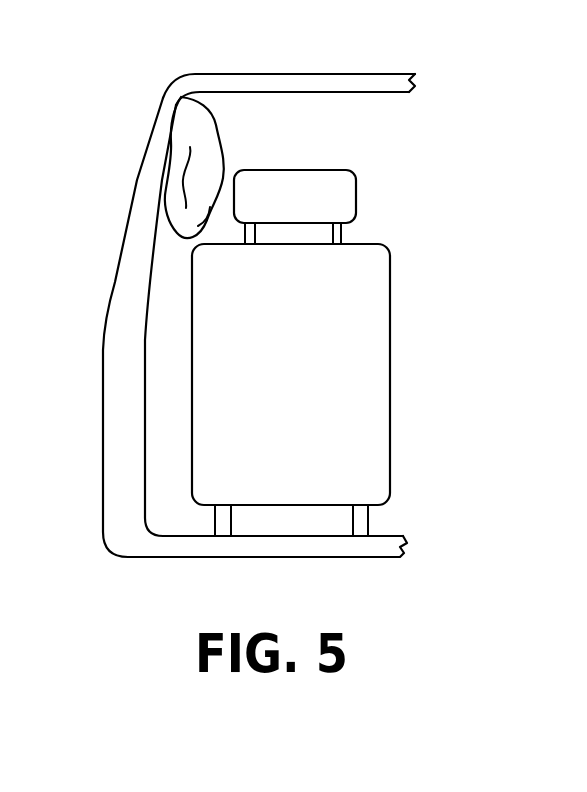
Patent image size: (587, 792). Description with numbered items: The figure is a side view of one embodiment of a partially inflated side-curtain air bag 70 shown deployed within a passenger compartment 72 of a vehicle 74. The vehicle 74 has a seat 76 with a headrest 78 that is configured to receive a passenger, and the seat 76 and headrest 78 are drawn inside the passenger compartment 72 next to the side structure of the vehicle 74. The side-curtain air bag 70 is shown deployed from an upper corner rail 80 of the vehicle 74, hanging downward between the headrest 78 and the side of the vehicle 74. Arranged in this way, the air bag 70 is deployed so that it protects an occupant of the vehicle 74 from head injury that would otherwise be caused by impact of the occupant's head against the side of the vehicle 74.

The side-curtain air bag 70 is at (240, 121).
The passenger compartment 72 is at (405, 182).
The vehicle 74 is at (115, 358).
The seat 76 is at (348, 416).
The headrest 78 is at (330, 202).
The upper corner rail 80 is at (180, 92).